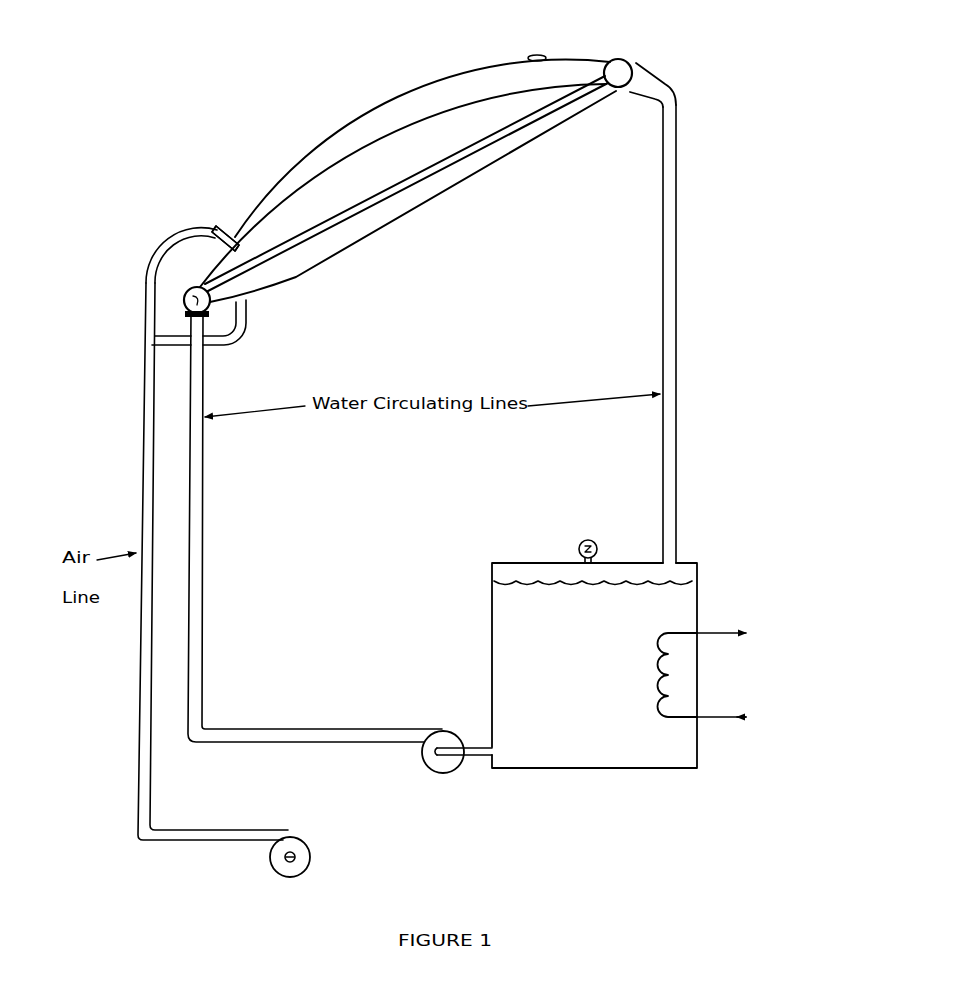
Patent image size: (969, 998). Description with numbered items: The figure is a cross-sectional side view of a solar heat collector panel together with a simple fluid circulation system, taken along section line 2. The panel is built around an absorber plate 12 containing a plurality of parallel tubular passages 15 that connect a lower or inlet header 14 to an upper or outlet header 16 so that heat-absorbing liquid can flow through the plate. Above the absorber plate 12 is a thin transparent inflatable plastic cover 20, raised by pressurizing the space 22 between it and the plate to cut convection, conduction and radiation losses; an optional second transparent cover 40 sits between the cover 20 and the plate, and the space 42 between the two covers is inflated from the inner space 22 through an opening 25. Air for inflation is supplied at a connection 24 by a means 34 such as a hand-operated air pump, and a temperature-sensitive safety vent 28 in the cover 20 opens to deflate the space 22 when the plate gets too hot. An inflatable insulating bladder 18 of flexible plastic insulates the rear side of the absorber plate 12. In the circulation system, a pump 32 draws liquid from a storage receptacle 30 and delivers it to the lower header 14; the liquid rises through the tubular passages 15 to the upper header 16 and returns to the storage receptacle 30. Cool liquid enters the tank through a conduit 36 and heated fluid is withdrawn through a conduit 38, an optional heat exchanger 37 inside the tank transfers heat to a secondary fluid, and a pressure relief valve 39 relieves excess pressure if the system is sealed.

The section line 2 is at (348, 95).
The absorber plate 12 is at (492, 146).
The lower or inlet header 14 is at (183, 304).
The tubular passages 15 is at (393, 193).
The upper or outlet header 16 is at (622, 71).
The inflatable insulating bladder 18 is at (300, 278).
The transparent inflatable plastic cover 20 is at (357, 117).
The space 22 is at (473, 117).
The connection 24 is at (278, 313).
The opening 25 is at (300, 162).
The temperature-sensitive safety vent 28 is at (530, 55).
The storage receptacle 30 is at (543, 775).
The pump 32 is at (420, 758).
The means for supplying gas 34 is at (313, 858).
The conduit 36 is at (755, 719).
The heat exchanger 37 is at (704, 580).
The conduit 38 is at (755, 634).
The pressure relief valve 39 is at (606, 524).
The second transparent cover 40 is at (352, 157).
The space 42 is at (447, 98).